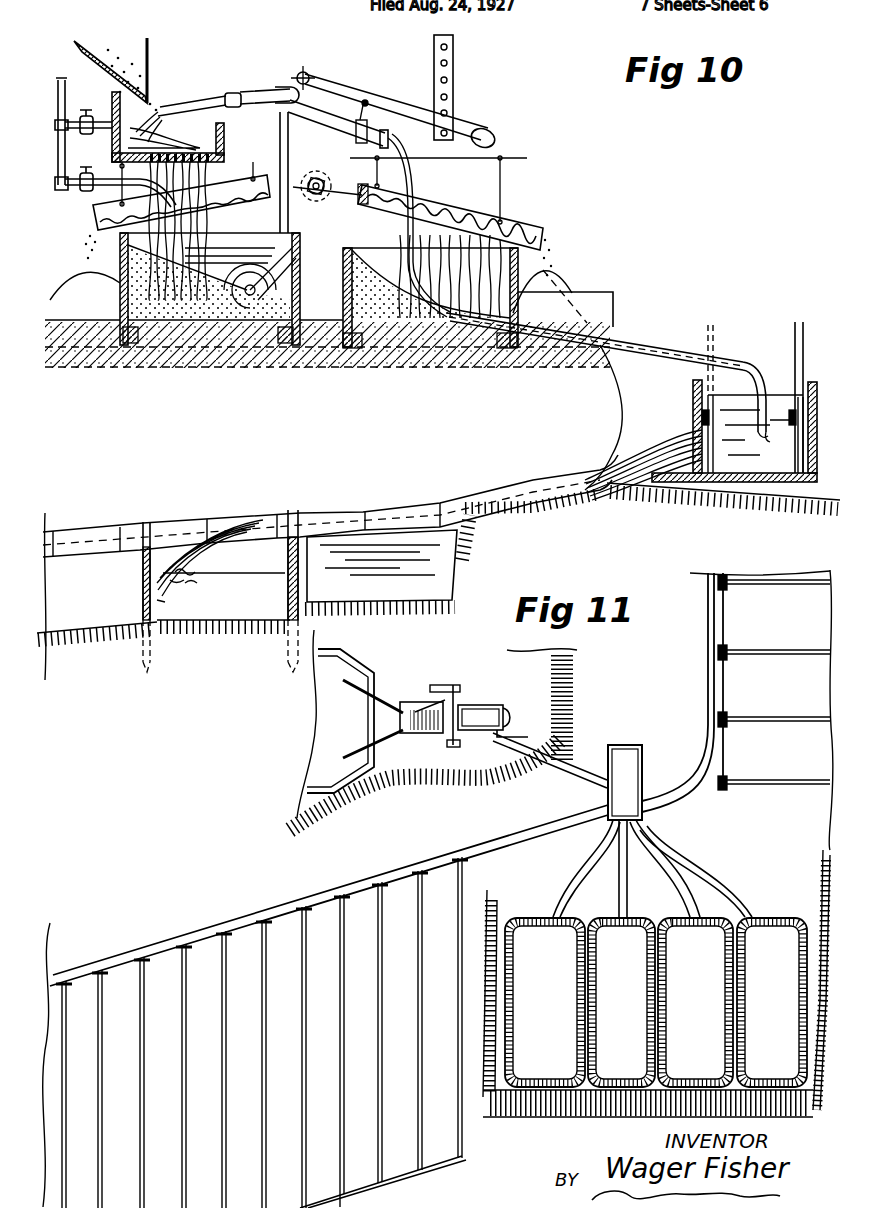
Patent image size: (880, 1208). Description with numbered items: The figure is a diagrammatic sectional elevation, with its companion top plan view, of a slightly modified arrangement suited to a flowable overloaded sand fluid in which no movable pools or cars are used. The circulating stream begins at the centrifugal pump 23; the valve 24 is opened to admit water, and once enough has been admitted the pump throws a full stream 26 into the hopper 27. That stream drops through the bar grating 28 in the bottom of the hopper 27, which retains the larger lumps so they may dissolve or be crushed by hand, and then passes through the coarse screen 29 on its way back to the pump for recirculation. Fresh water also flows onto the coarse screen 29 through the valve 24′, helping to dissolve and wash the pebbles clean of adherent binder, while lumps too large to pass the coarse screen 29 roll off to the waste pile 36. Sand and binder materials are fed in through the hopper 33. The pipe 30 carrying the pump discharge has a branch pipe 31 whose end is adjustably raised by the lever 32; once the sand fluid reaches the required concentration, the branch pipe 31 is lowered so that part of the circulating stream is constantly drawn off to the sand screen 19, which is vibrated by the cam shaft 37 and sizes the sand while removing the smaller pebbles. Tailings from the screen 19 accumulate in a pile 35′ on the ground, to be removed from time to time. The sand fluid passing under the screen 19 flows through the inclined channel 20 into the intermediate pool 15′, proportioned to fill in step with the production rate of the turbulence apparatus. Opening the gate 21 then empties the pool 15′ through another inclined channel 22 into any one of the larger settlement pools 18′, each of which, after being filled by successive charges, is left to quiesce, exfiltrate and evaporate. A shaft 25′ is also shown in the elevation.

In FIG. 10, the hopper 33 is at (141, 41).
In FIG. 11, the hopper 33 is at (362, 706).
In FIG. 10, the valve 24 is at (84, 120).
In FIG. 10, the valve 24′ is at (97, 167).
In FIG. 10, the stream 26 is at (160, 125).
In FIG. 10, the hopper 27 is at (176, 163).
In FIG. 11, the hopper 27 is at (405, 702).
In FIG. 10, the bar grating 28 is at (229, 153).
In FIG. 10, the coarse screen 29 is at (100, 213).
In FIG. 10, the drive shaft 25′ is at (270, 202).
In FIG. 10, the pipe 30 is at (287, 168).
In FIG. 10, the branch pipe 31 is at (309, 123).
In FIG. 10, the lever 32 is at (480, 129).
In FIG. 10, the cam shaft 37 is at (322, 186).
In FIG. 10, the screen 19 is at (543, 223).
In FIG. 10, the pile 36 is at (78, 279).
In FIG. 10, the pile 35′ is at (548, 273).
In FIG. 10, the centrifugal pump 23 is at (248, 303).
In FIG. 10, the inclined channel 20 is at (645, 355).
In FIG. 11, the inclined channel 20 is at (568, 763).
In FIG. 10, the gate 21 is at (705, 376).
In FIG. 10, the intermediate pool 15′ is at (775, 377).
In FIG. 11, the intermediate pool 15′ is at (626, 762).
In FIG. 10, the inclined channel 22 is at (566, 484).
In FIG. 11, the inclined channel 22 is at (528, 831).
In FIG. 10, the settlement pools 18′ is at (216, 600).
In FIG. 11, the settlement pools 18′ is at (395, 1170).